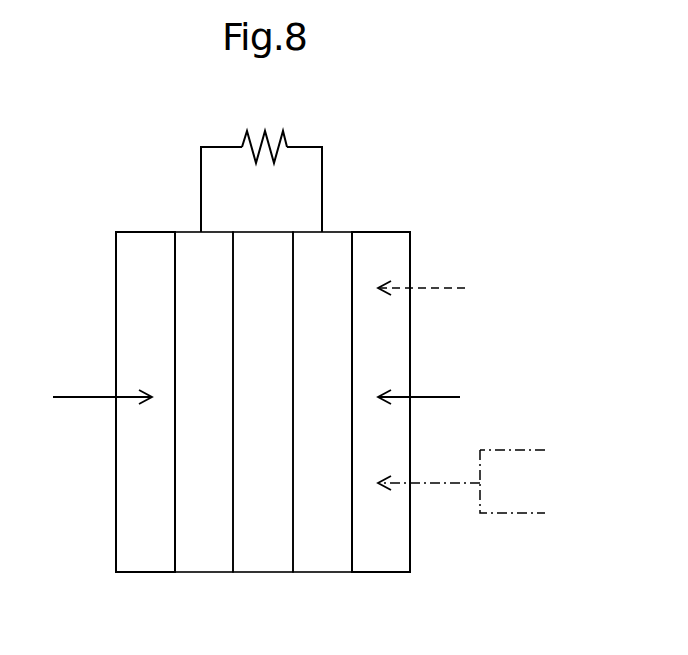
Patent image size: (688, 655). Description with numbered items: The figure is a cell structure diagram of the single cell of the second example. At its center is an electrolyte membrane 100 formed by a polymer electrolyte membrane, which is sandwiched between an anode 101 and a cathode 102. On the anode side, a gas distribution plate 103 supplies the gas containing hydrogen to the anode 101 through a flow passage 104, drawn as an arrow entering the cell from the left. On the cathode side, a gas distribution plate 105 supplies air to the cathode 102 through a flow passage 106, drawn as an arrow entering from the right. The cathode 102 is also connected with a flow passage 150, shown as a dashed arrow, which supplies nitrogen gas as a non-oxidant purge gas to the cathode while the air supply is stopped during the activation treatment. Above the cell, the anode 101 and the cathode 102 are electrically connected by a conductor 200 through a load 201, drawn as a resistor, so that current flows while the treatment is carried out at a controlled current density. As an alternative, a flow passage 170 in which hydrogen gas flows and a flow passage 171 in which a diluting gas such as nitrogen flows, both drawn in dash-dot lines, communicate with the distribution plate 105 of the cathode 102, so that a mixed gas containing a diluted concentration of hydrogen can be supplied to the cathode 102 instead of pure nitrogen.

The electrolyte membrane 100 is at (261, 560).
The anode 101 is at (190, 560).
The cathode 102 is at (323, 562).
The gas distribution plate 103 is at (127, 530).
The flow passage 104 is at (68, 399).
The gas distribution plate 105 is at (385, 560).
The flow passage 106 is at (437, 396).
The flow passage 150 is at (445, 288).
The flow passage 170 is at (533, 513).
The flow passage 171 is at (530, 450).
The conductor 200 is at (201, 172).
The load 201 is at (288, 136).